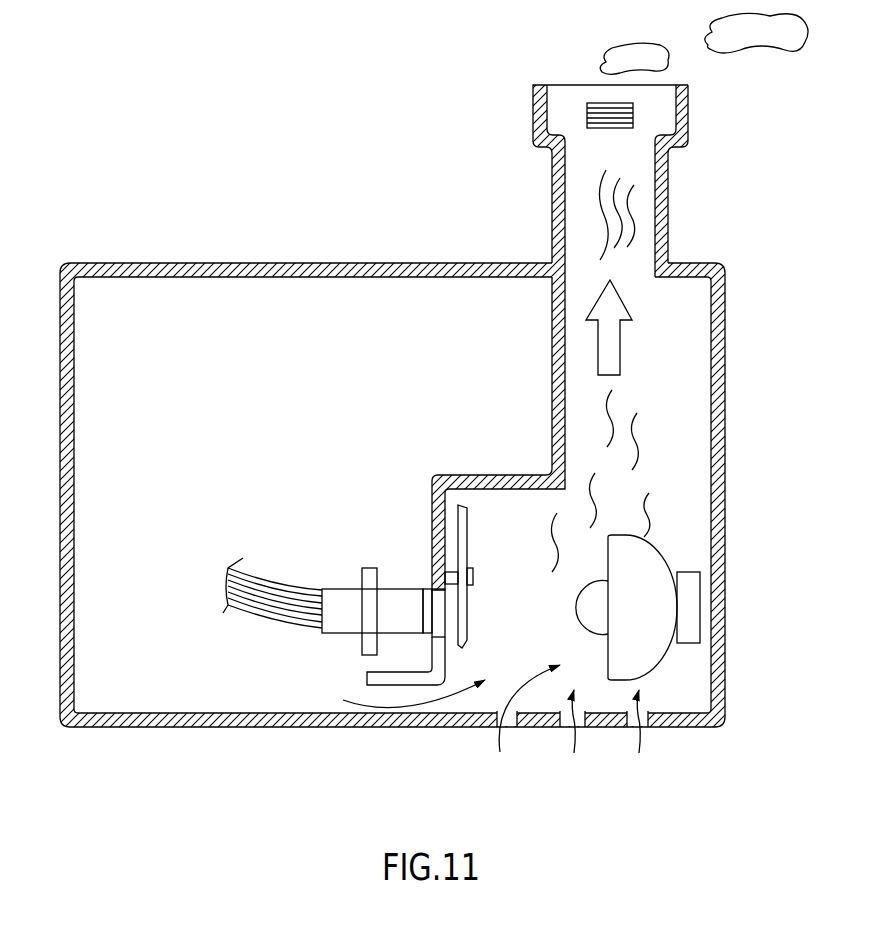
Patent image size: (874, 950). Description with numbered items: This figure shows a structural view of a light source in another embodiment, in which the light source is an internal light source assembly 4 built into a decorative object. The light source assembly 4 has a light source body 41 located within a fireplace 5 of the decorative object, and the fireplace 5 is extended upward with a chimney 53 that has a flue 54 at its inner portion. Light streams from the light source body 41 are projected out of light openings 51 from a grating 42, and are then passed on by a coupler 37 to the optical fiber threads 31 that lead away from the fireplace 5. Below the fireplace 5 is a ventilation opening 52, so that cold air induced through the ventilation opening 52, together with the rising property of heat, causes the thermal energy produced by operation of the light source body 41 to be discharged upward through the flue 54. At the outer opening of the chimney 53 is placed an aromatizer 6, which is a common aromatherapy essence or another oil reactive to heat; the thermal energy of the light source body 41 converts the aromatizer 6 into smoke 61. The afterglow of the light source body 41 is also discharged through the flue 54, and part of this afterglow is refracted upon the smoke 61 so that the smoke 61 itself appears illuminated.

The light source assembly 4 is at (670, 488).
The fireplace 5 is at (492, 457).
The aromatizer 6 is at (587, 113).
The optical fiber threads 31 is at (280, 590).
The coupler 37 is at (343, 610).
The light source body 41 is at (657, 617).
The grating 42 is at (463, 542).
The light openings 51 is at (437, 610).
The ventilation opening 52 is at (418, 697).
The chimney 53 is at (668, 185).
The flue 54 is at (627, 212).
The smoke 61 is at (767, 38).